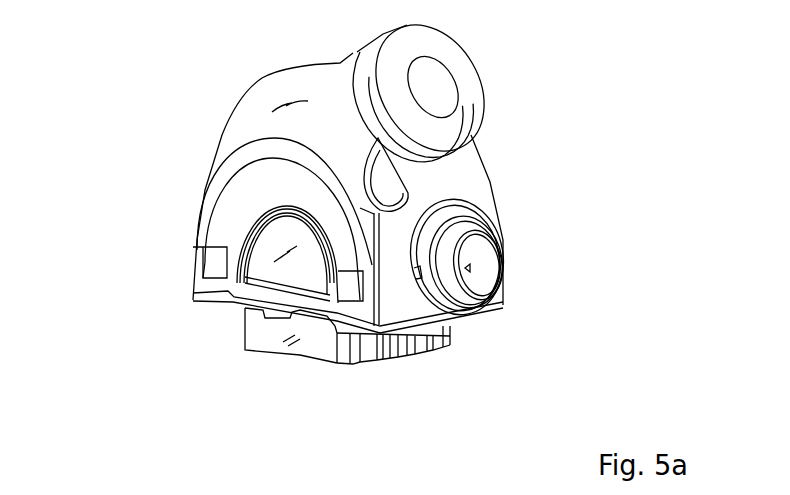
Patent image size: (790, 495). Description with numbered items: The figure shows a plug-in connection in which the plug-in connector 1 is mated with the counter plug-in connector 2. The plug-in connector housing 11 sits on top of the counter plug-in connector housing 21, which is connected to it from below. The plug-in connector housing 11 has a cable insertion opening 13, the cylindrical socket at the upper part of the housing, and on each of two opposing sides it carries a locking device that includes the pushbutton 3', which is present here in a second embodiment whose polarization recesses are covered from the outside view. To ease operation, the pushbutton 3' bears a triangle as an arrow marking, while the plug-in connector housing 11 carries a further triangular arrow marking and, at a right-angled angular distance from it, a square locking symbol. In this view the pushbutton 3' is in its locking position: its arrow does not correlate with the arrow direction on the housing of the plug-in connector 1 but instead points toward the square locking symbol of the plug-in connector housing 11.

The plug-in connector 1 is at (182, 83).
The plug-in connector housing 11 is at (218, 140).
The cable insertion opening 13 is at (428, 88).
The pushbutton 3' is at (525, 257).
The counter plug-in connector 2 is at (468, 365).
The counter plug-in connector housing 21 is at (270, 328).